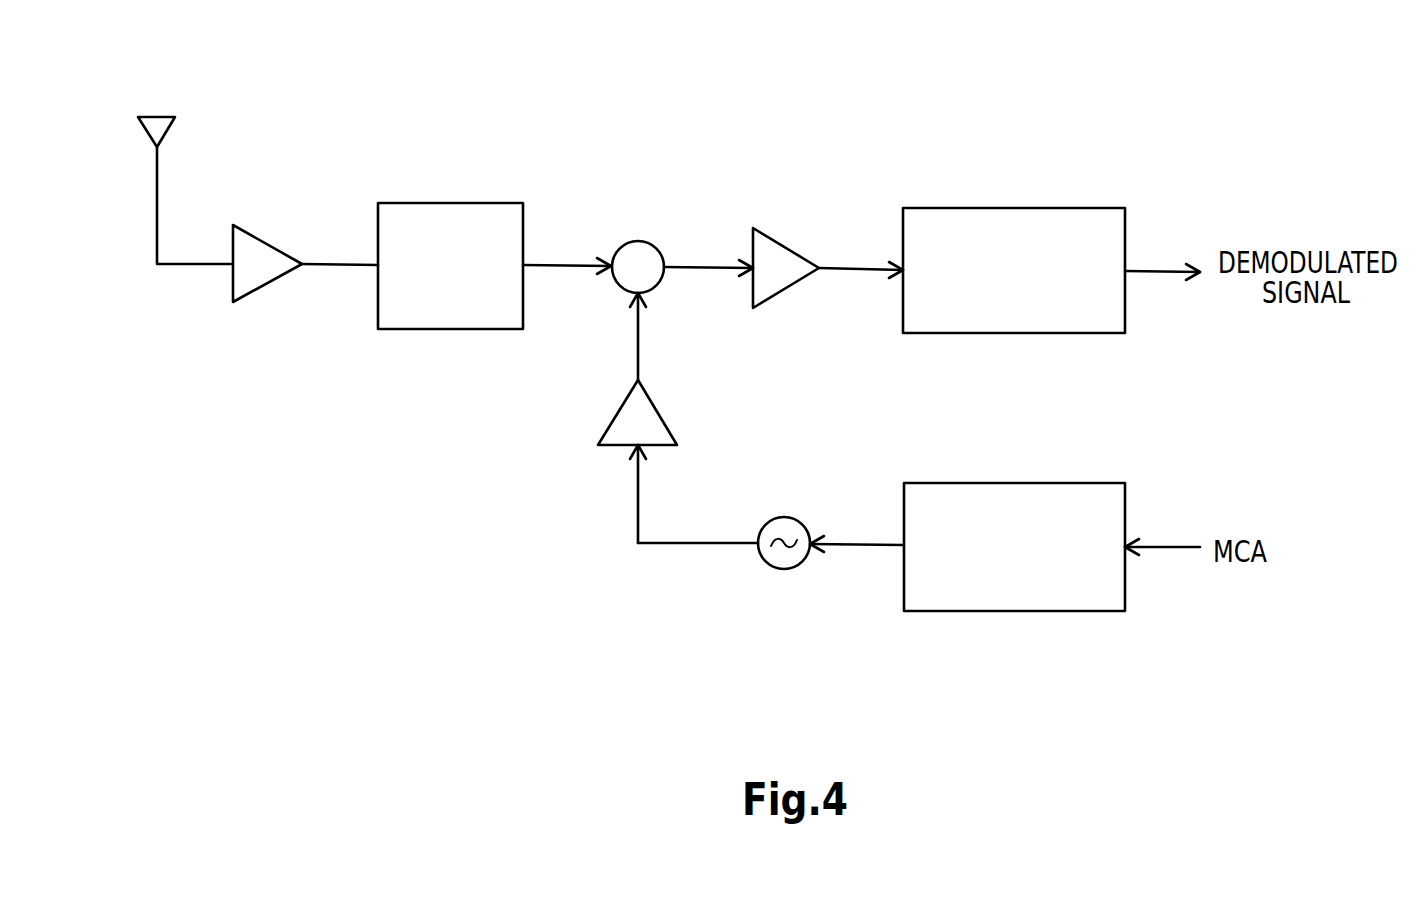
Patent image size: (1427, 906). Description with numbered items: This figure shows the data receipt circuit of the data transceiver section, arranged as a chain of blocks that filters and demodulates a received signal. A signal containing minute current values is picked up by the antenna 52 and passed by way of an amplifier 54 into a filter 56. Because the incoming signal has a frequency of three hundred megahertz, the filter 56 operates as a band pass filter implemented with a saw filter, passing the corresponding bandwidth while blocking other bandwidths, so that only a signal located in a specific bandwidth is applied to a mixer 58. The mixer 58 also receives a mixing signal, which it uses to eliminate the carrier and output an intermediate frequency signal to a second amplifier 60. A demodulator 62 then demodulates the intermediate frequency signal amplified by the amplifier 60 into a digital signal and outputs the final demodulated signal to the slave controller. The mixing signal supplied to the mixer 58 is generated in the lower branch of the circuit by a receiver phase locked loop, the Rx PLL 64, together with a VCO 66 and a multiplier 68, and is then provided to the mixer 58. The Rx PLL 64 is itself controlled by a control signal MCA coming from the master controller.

The antenna 52 is at (153, 116).
The amplifier 54 is at (264, 240).
The filter 56 is at (455, 202).
The mixer 58 is at (636, 240).
The amplifier 60 is at (781, 244).
The demodulator 62 is at (1008, 207).
The receiver phase locked loop (Rx PLL) 64 is at (1009, 482).
The VCO 66 is at (782, 517).
The multiplier 68 is at (658, 400).